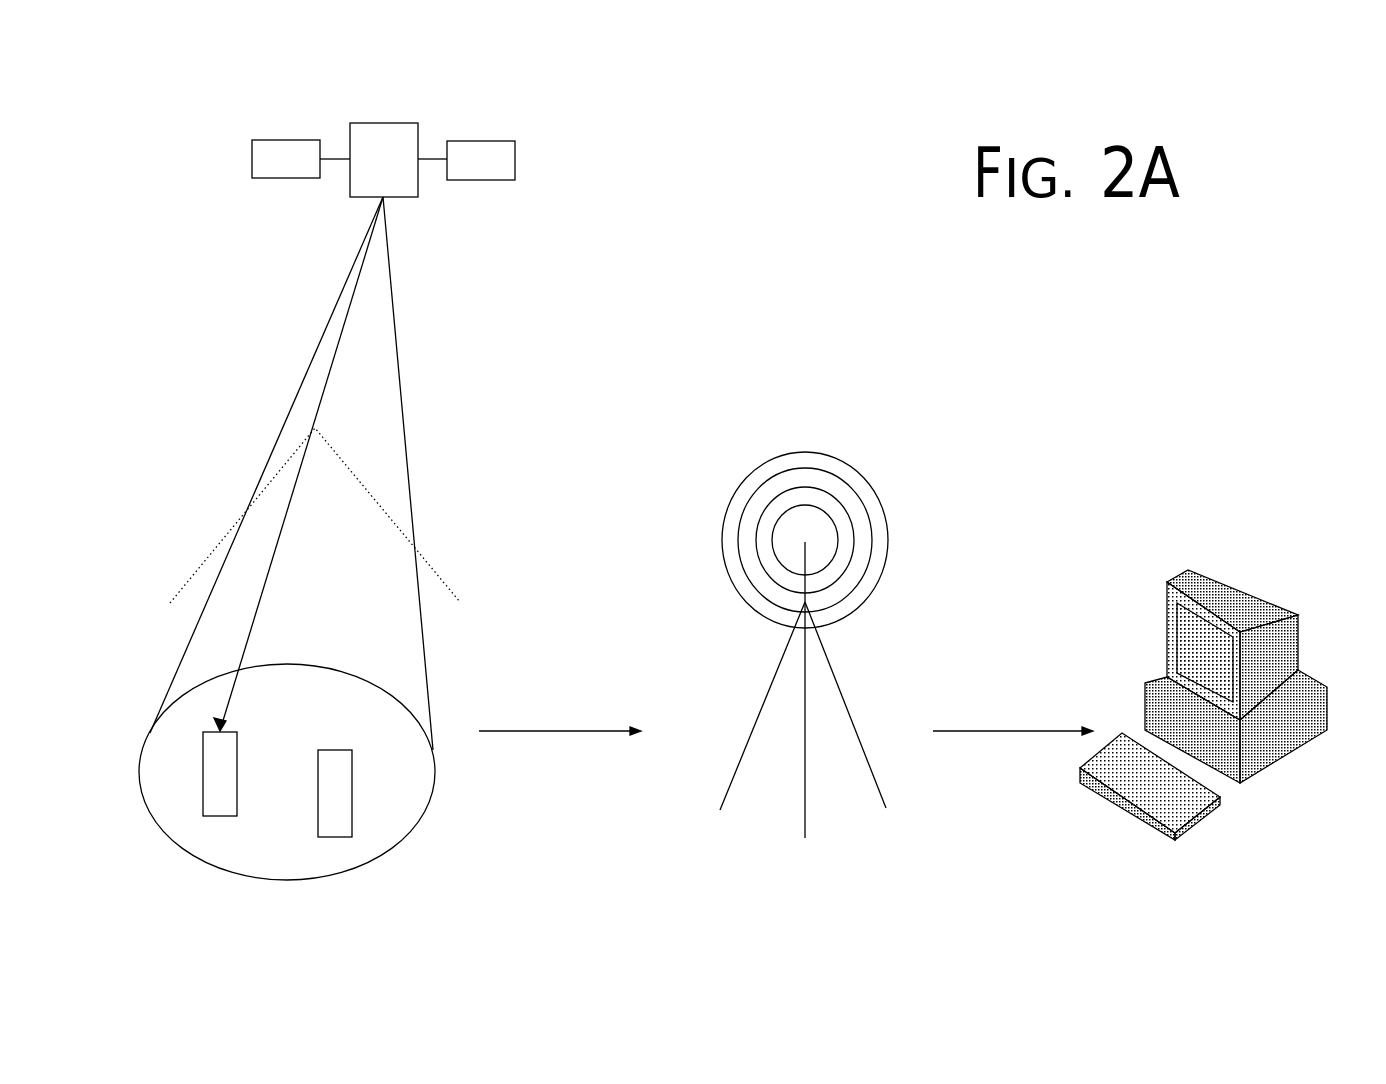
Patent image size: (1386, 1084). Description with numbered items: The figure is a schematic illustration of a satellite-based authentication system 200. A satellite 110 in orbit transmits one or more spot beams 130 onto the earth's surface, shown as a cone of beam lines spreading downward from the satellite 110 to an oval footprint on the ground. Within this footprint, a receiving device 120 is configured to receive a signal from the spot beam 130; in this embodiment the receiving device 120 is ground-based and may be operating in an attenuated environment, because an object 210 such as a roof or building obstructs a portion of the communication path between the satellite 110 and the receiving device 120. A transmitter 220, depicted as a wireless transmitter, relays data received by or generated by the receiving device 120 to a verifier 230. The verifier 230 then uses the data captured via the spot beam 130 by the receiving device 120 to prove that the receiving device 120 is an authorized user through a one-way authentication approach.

The satellite-based authentication system 200 is at (280, 86).
The satellite 110 is at (384, 122).
The object 210 is at (460, 602).
The spot beam 130 is at (285, 880).
The receiving device 120 is at (218, 773).
The transmitter 220 is at (863, 446).
The verifier 230 is at (1233, 573).